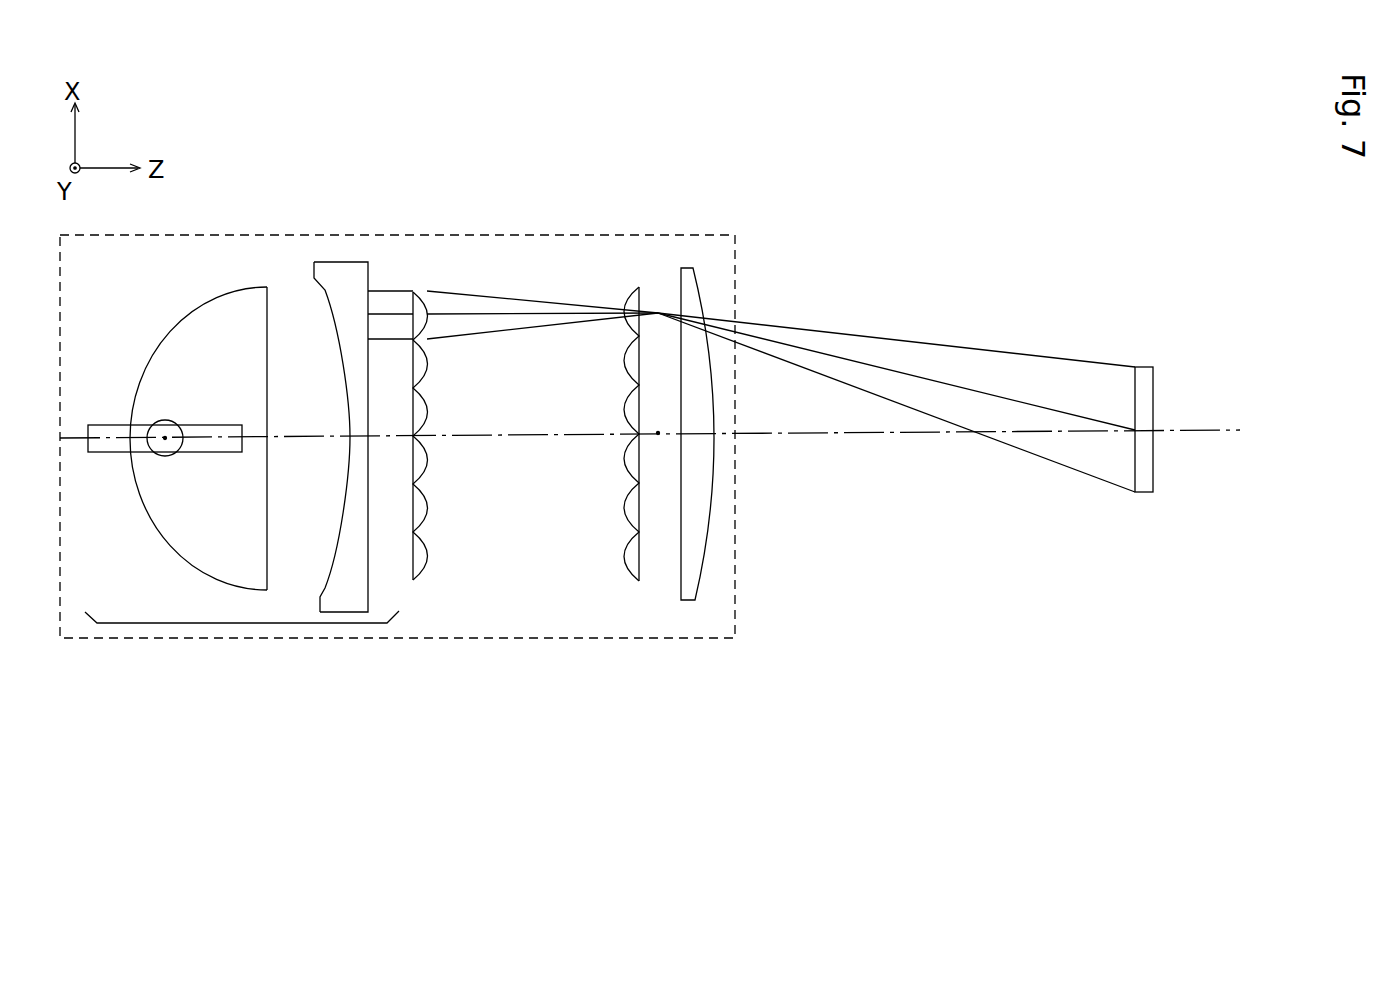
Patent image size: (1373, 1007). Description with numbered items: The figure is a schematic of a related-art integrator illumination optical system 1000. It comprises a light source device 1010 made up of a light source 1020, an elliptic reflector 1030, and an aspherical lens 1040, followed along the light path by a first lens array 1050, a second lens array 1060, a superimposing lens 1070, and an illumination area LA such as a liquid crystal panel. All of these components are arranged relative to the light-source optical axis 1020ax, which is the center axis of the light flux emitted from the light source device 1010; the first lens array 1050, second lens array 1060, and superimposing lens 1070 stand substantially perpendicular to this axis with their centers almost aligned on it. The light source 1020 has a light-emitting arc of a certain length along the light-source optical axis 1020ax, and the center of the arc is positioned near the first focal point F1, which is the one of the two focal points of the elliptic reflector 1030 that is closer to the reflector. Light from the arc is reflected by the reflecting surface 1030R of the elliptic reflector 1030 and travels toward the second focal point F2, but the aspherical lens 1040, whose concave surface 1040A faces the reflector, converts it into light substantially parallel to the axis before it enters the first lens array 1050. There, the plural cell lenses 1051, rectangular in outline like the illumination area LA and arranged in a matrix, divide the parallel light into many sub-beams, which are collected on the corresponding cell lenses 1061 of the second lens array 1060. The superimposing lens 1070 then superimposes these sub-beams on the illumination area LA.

The illumination optical system 1000 is at (720, 235).
The light source device 1010 is at (294, 624).
The light source 1020 is at (165, 440).
The light-source optical axis 1020ax is at (1215, 430).
The elliptic reflector 1030 is at (198, 394).
The reflecting surface 1030R is at (199, 318).
The aspherical lens 1040 is at (305, 384).
The concave surface of lens 1040A is at (335, 333).
The first lens array 1050 is at (475, 381).
The cell lenses 1051 is at (421, 313).
The second lens array 1060 is at (644, 368).
The cell lenses 1061 is at (638, 287).
The superimposing lens 1070 is at (694, 280).
The illumination area LA is at (1144, 367).
The first focal point F1 is at (160, 446).
The second focal point F2 is at (660, 436).